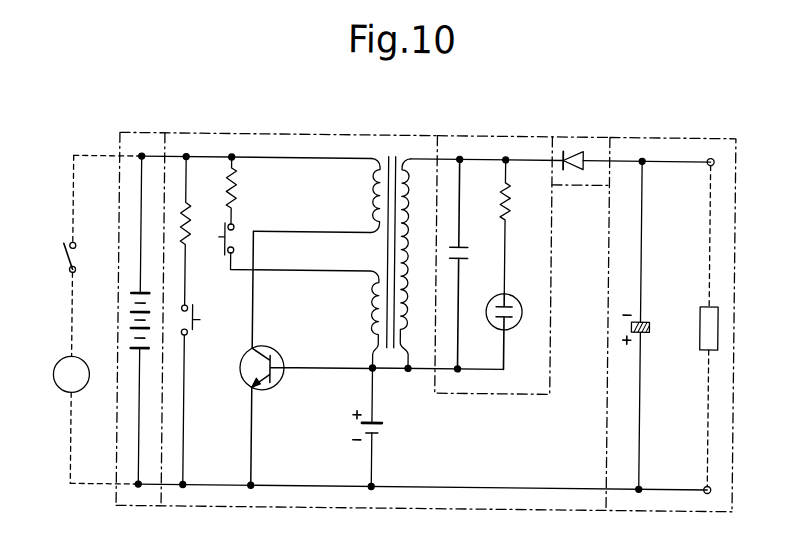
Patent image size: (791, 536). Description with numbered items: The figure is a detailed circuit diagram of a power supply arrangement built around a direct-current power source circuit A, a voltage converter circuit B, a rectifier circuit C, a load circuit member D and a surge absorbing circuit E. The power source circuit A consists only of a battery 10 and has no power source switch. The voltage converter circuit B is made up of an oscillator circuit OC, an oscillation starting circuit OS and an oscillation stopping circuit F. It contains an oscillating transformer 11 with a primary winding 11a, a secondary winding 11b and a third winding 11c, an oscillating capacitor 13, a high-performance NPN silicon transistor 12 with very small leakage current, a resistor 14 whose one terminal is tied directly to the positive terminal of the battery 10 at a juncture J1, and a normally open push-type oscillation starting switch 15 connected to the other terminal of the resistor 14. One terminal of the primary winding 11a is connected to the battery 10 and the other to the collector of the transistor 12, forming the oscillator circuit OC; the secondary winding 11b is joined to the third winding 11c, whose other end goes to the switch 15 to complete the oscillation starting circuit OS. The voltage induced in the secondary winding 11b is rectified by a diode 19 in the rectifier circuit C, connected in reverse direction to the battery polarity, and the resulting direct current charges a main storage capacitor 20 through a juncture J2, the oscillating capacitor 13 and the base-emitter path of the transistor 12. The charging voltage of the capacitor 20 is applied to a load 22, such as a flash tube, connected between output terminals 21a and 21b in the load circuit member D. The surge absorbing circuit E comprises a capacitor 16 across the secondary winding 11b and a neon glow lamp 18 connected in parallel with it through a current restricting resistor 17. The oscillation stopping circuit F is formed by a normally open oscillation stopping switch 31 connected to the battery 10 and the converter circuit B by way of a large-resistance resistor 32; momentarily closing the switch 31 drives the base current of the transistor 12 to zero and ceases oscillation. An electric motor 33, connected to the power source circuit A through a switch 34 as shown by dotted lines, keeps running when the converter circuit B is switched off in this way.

The battery 10 is at (130, 319).
The oscillating transformer 11 is at (393, 153).
The primary winding 11a is at (366, 216).
The secondary winding 11b is at (412, 334).
The third winding 11c is at (366, 326).
The transistor 12 is at (248, 385).
The oscillating capacitor 13 is at (379, 434).
The resistor 14 is at (233, 200).
The oscillation starting switch 15 is at (220, 241).
The capacitor 16 is at (466, 256).
The current restricting resistor 17 is at (508, 214).
The neon glow lamp 18 is at (517, 324).
The diode 19 is at (565, 171).
The main storage capacitor 20 is at (646, 332).
The output terminal 21a is at (705, 163).
The output terminal 21b is at (704, 487).
The load circuit 22 is at (700, 304).
The oscillation stopping switch 31 is at (194, 334).
The resistor 32 is at (189, 214).
The electric motor 33 is at (85, 391).
The switch 34 is at (76, 260).
The direct-current power source circuit A is at (135, 133).
The voltage converter circuit B is at (323, 133).
The rectifier circuit C is at (594, 133).
The load circuit member D is at (697, 135).
The surge absorbing circuit E is at (520, 133).
The oscillator circuit OC is at (283, 179).
The oscillation starting circuit OS is at (247, 274).
The oscillation stopping circuit F is at (181, 324).
The junction J1 is at (227, 147).
The juncture J2 is at (363, 381).